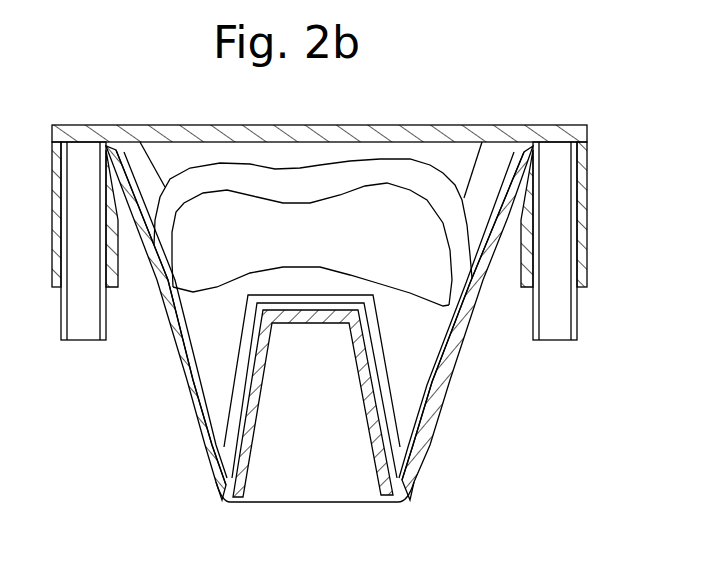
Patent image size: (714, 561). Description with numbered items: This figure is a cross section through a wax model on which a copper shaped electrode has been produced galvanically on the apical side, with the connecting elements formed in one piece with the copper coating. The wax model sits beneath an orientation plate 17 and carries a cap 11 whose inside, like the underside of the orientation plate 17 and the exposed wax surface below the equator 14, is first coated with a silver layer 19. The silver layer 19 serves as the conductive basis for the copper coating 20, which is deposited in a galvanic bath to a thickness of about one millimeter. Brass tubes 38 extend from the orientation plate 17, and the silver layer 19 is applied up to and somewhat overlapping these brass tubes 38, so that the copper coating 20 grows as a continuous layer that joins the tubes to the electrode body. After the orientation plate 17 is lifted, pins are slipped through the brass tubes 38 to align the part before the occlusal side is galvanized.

The cap 11 is at (233, 403).
The equator 14 is at (445, 305).
The orientation plate 17 is at (453, 125).
The silver layer 19 is at (432, 438).
The copper coating 20 is at (583, 208).
The brass tubes 38 is at (573, 315).